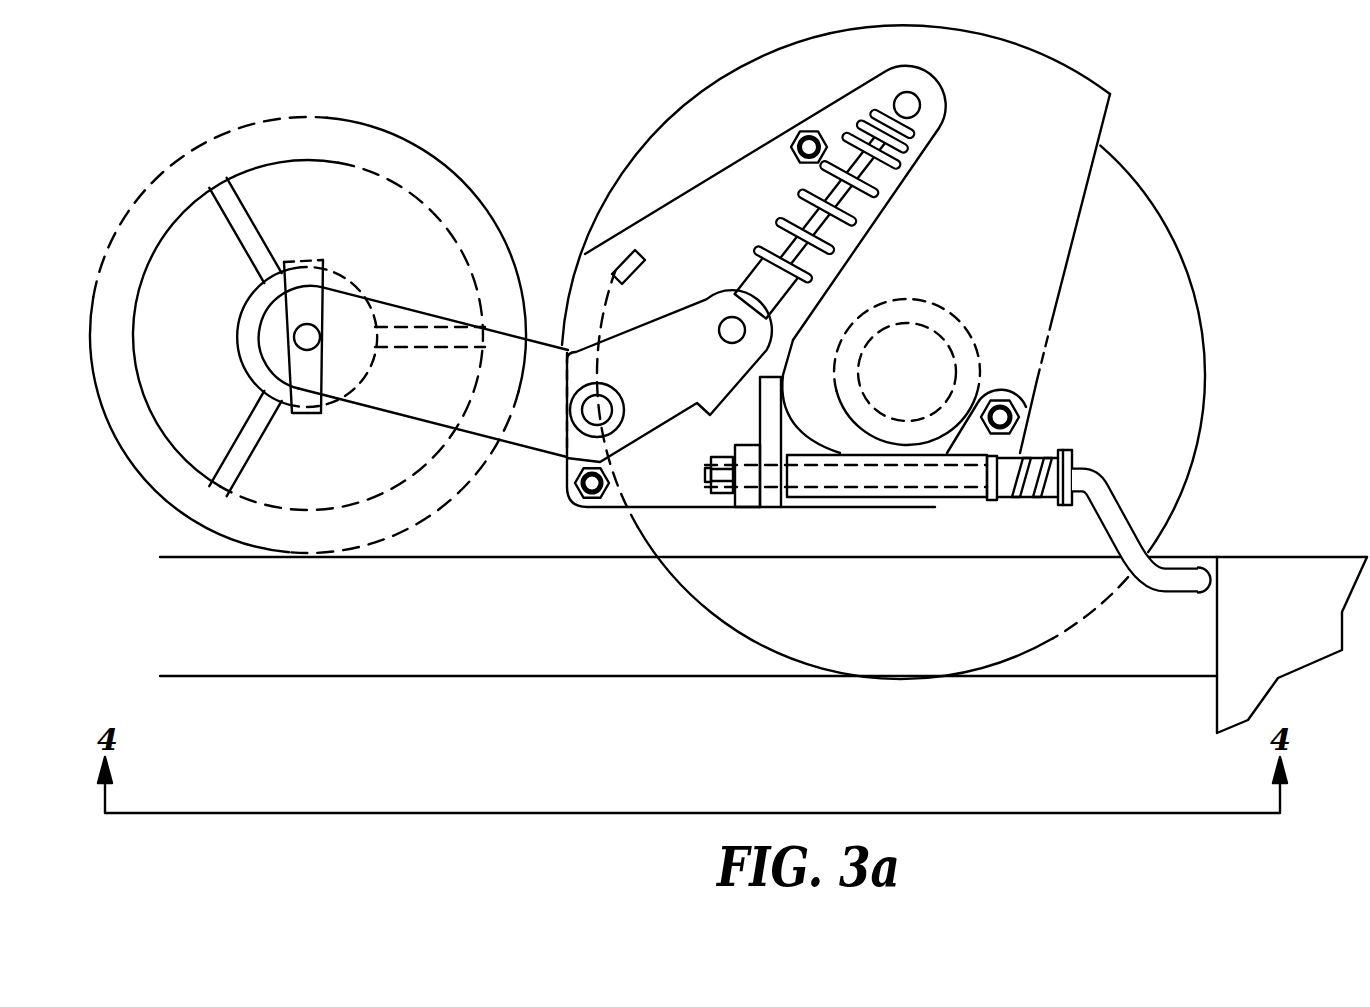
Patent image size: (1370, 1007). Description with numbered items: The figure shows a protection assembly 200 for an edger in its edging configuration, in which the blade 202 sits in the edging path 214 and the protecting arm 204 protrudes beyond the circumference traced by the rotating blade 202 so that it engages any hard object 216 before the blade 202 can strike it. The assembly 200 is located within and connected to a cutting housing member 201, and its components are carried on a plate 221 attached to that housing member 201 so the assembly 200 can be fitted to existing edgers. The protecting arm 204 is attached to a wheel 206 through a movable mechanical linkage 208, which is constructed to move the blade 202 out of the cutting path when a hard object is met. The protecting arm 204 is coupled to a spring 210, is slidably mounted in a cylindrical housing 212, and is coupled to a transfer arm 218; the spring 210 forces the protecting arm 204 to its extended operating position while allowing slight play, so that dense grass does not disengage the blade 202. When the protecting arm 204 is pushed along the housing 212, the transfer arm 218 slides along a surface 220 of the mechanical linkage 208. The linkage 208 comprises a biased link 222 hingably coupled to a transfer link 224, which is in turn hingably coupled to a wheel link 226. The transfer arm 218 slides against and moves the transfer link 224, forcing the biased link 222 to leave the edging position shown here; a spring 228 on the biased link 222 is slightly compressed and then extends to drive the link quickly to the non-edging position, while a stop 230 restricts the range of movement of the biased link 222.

The protection assembly 200 is at (1208, 76).
The cutting housing member 201 is at (1083, 70).
The blade 202 is at (1130, 168).
The protecting arm 204 is at (1120, 563).
The wheel 206 is at (246, 125).
The mechanical linkage 208 is at (570, 276).
The spring 210 is at (1013, 497).
The cylindrical housing 212 is at (860, 500).
The edging path 214 is at (481, 553).
The hard object 216 is at (1295, 575).
The transfer arm 218 is at (753, 497).
The surface 220 is at (713, 413).
The plate 221 is at (823, 110).
The biased link 222 is at (777, 140).
The transfer link 224 is at (630, 337).
The wheel link 226 is at (423, 313).
The spring 228 is at (890, 173).
The stop 230 is at (617, 247).